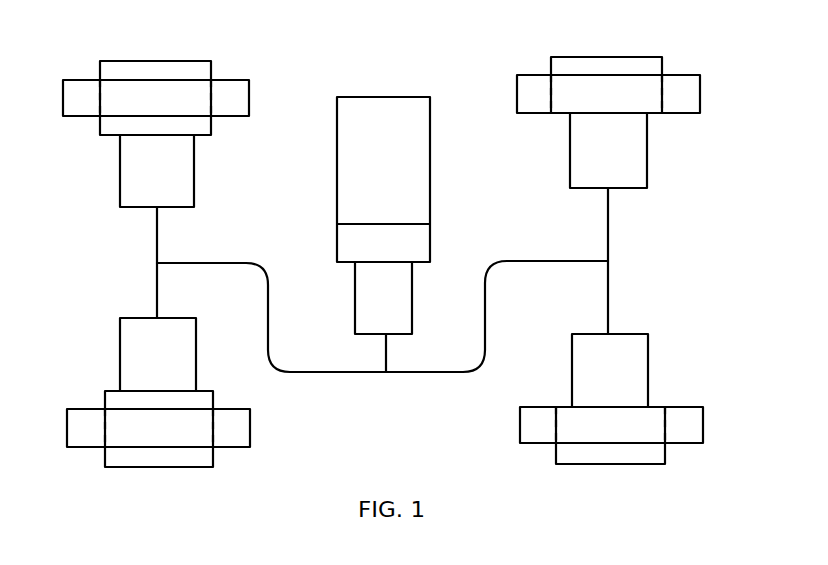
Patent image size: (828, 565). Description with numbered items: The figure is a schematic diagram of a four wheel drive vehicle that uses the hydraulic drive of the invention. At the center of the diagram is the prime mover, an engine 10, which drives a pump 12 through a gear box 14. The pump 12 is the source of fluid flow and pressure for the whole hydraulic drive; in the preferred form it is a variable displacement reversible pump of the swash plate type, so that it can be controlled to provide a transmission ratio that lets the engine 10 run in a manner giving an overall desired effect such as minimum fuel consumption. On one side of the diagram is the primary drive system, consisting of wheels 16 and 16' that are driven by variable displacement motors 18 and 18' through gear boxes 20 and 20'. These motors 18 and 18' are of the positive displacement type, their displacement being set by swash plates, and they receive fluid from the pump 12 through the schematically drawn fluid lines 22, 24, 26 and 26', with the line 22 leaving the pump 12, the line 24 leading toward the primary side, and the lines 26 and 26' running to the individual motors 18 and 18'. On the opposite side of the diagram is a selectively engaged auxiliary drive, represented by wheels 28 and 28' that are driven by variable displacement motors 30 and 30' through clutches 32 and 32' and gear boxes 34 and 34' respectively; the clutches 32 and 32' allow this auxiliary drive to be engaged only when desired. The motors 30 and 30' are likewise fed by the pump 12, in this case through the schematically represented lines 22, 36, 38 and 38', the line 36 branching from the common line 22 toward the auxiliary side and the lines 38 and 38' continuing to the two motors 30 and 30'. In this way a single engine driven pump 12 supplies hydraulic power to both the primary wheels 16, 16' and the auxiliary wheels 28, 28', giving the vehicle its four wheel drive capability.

The engine 10 is at (432, 155).
The pump 12 is at (412, 307).
The gear box 14 is at (432, 237).
The wheel 16 is at (640, 419).
The wheel 16' is at (638, 84).
The variable displacement motor 18 is at (639, 370).
The variable displacement motor 18' is at (639, 150).
The gear box 20 is at (642, 444).
The gear box 20' is at (607, 63).
The fluid line 22 is at (388, 353).
The fluid line 24 is at (503, 312).
The fluid line 26 is at (640, 297).
The fluid line 26' is at (648, 224).
The wheel 28 is at (141, 449).
The wheel 28' is at (175, 72).
The variable displacement motor 30 is at (127, 354).
The variable displacement motor 30' is at (189, 171).
The clutch 32 is at (125, 412).
The clutch 32' is at (139, 129).
The gear box 34 is at (150, 451).
The gear box 34' is at (142, 73).
The fluid line 36 is at (312, 373).
The fluid line 38 is at (191, 290).
The fluid line 38' is at (117, 235).